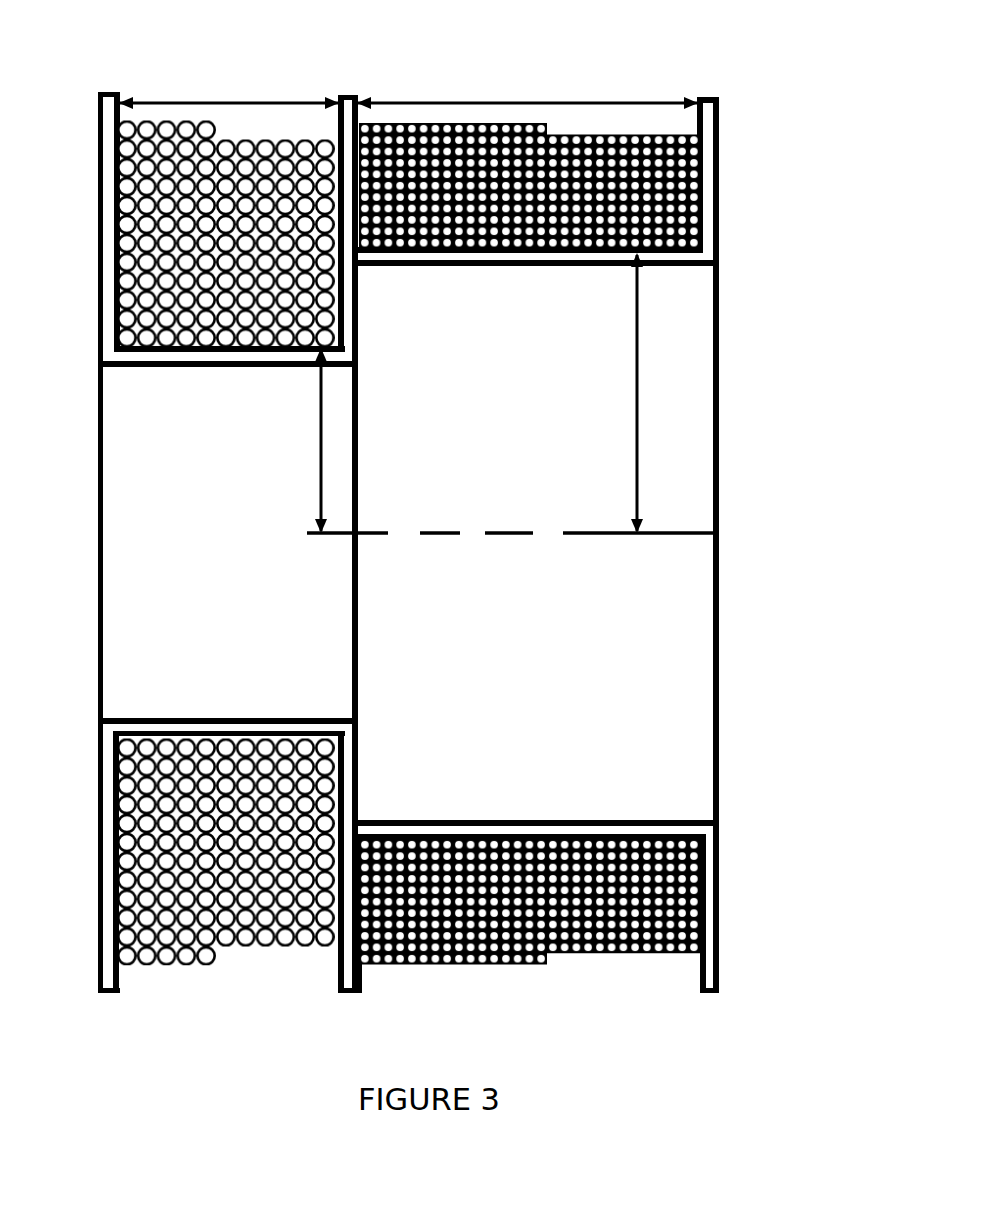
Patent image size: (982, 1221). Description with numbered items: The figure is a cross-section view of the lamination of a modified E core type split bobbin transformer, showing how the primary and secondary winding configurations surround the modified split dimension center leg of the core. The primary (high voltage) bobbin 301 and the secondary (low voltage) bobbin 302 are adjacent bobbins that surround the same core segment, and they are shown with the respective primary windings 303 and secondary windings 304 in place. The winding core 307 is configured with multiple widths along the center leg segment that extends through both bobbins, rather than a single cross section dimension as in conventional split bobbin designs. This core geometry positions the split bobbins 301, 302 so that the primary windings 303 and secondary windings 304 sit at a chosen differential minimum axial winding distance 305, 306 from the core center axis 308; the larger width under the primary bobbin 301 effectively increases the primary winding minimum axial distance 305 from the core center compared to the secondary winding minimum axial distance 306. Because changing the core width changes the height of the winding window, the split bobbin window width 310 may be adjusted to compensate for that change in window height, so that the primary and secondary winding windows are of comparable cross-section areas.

The primary (high voltage) bobbin 301 is at (634, 46).
The secondary (low voltage) bobbin 302 is at (188, 52).
The primary windings 303 is at (700, 197).
The secondary windings 304 is at (132, 183).
The minimum axial winding distance (primary) 305 is at (640, 353).
The minimum axial winding distance (secondary) 306 is at (487, 100).
The winding core 307 is at (168, 447).
The core center axis 308 is at (673, 532).
The split bobbin window width 310 is at (220, 100).